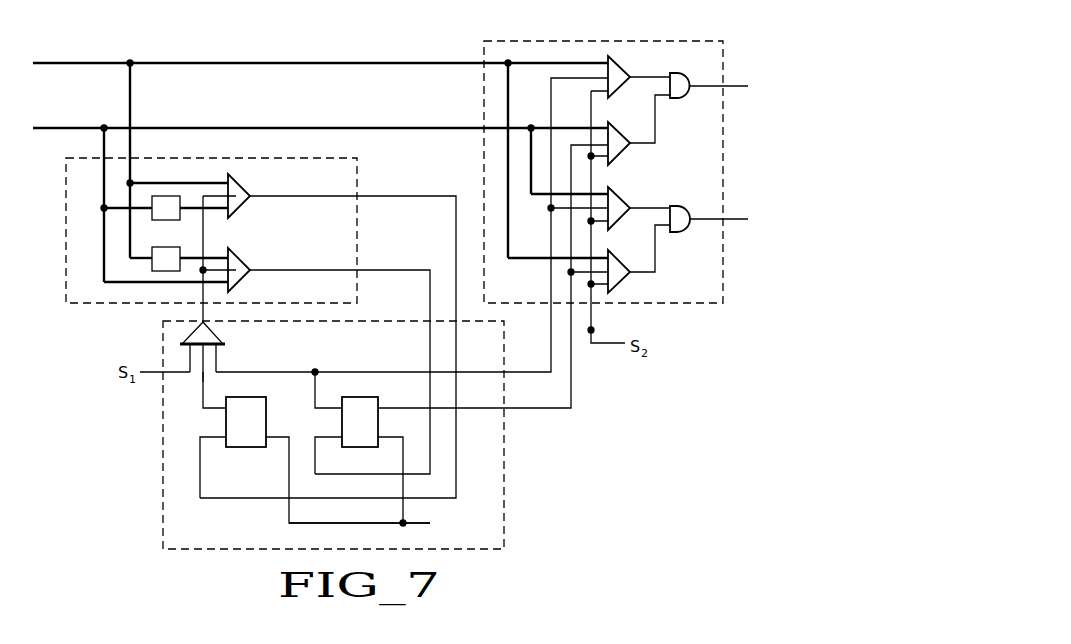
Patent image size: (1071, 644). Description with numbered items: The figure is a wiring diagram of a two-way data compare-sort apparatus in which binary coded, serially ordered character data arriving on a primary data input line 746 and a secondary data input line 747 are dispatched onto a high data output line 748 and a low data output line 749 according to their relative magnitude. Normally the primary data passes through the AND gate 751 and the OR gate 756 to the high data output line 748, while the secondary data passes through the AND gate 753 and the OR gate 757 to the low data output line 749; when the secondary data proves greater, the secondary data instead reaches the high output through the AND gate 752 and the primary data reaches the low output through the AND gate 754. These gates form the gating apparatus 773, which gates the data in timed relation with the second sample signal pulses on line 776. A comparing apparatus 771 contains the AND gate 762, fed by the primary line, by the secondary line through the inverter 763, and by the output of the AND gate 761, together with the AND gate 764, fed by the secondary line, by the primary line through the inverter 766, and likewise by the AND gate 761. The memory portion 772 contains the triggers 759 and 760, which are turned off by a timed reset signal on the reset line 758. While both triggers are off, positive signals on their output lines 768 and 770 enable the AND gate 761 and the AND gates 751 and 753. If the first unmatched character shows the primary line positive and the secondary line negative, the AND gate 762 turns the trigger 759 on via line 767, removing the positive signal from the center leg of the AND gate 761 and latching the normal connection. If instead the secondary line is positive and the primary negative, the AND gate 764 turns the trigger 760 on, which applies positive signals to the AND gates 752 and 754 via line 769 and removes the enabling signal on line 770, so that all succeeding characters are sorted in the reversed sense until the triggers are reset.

The primary data input line 746 is at (111, 66).
The secondary data input line 747 is at (92, 133).
The high data output line 748 is at (710, 87).
The low data output line 749 is at (709, 220).
The AND gate 751 is at (614, 63).
The AND gate 752 is at (614, 128).
The AND gate 753 is at (615, 195).
The AND gate 754 is at (614, 260).
The OR gate 756 is at (677, 79).
The OR gate 757 is at (677, 212).
The reset line 758 is at (345, 523).
The trigger 759 is at (238, 406).
The trigger 760 is at (357, 405).
The AND gate 761 is at (214, 336).
The AND gate 762 is at (243, 192).
The inverter 763 is at (173, 219).
The AND gate 764 is at (243, 263).
The inverter 766 is at (152, 262).
The line 767 is at (434, 196).
The output line 768 is at (203, 380).
The line 769 is at (571, 372).
The output line 770 is at (315, 388).
The comparing apparatus 771 is at (66, 258).
The memory portion 772 is at (505, 488).
The gating apparatus 773 is at (612, 41).
The line 776 is at (591, 331).